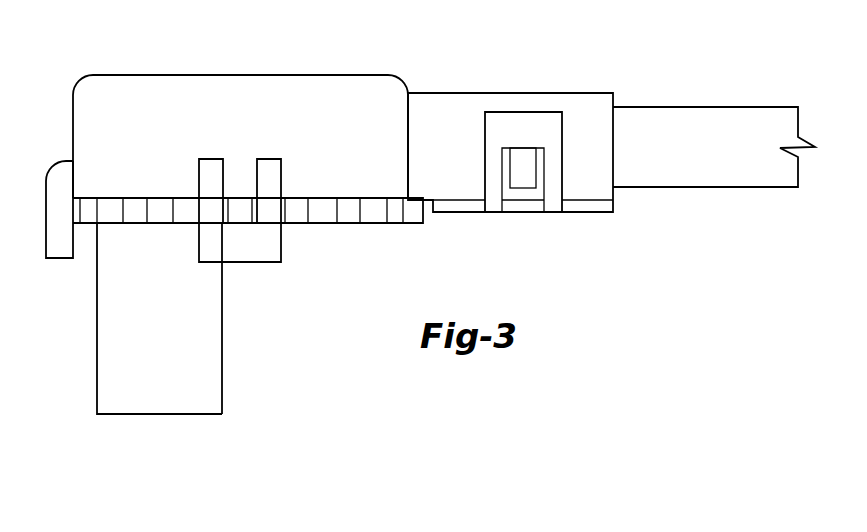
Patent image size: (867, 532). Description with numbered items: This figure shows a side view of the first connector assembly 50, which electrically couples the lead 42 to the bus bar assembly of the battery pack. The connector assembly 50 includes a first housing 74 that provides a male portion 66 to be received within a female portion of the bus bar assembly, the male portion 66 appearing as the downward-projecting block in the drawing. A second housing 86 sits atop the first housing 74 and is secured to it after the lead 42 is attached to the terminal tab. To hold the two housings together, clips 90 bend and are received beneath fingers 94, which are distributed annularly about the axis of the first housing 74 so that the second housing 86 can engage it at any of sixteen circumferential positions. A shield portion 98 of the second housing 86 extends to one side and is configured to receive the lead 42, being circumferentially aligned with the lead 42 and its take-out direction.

The first connector assembly 50 is at (426, 52).
The second housing 86 is at (224, 75).
The fingers 94 is at (242, 212).
The clips 90 is at (272, 244).
The male portion 66 is at (97, 334).
The first housing 74 is at (222, 334).
The shield portion 98 is at (540, 93).
The lead 42 is at (705, 107).